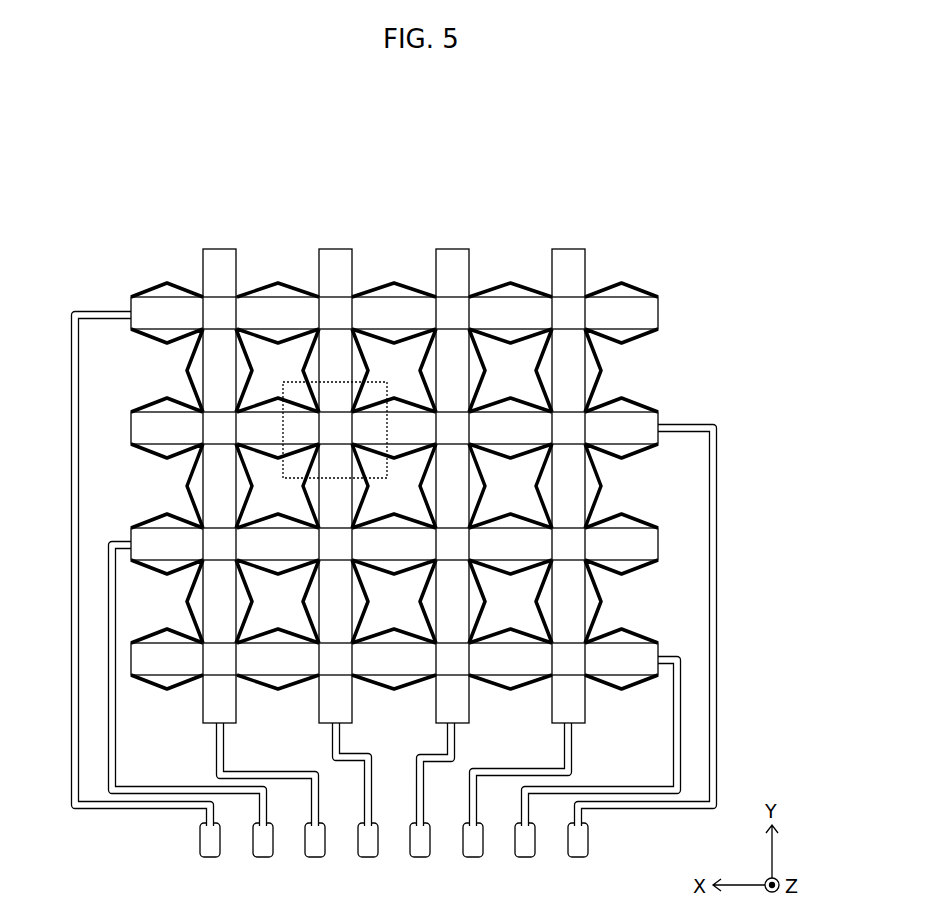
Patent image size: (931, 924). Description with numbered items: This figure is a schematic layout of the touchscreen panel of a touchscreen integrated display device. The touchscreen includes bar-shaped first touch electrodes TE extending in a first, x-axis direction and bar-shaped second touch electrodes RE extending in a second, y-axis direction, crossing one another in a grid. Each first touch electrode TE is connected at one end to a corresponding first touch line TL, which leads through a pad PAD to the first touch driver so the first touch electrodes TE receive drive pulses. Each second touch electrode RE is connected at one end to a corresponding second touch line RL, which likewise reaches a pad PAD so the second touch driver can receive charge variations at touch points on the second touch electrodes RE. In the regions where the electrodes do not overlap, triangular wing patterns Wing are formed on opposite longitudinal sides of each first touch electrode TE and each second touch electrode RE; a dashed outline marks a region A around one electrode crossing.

The wing pattern Wing is at (278, 283).
The region A is at (367, 380).
The second touch electrode RE is at (567, 249).
The first touch electrode TE is at (658, 317).
The first touch line TL is at (717, 740).
The second touch line RL is at (503, 770).
The pad PAD is at (472, 858).